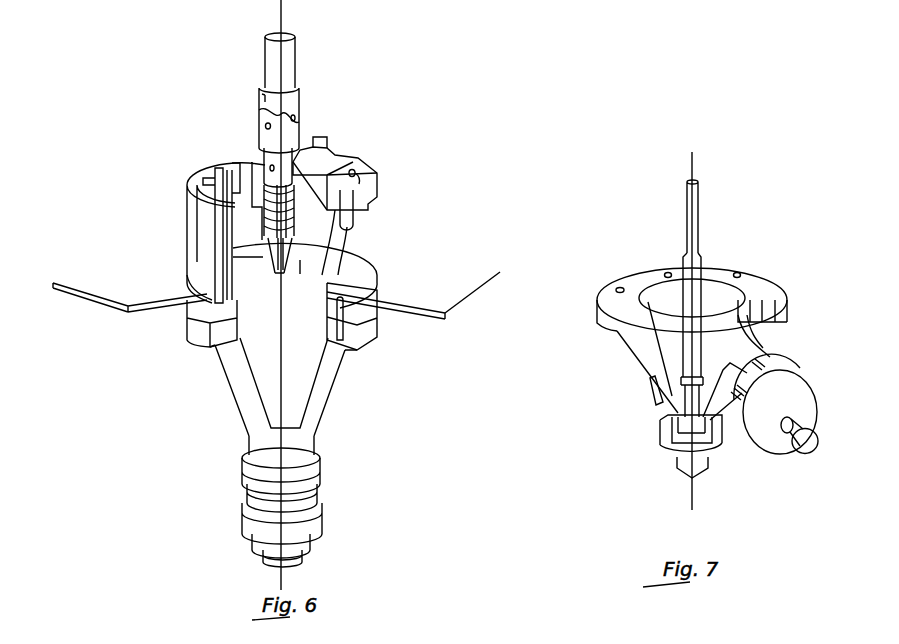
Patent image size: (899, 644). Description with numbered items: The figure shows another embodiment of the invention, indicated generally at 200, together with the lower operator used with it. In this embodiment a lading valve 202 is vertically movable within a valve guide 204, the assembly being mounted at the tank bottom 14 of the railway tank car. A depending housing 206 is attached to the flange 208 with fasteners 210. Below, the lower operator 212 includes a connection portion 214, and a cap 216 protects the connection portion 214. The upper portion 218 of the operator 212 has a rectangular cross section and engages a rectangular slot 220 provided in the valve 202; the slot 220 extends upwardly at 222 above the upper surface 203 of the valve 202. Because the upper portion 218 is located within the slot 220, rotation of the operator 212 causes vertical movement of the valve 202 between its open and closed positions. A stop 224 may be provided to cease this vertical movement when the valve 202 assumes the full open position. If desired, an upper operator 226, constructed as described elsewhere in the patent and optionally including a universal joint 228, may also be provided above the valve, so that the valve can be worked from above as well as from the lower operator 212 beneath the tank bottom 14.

In FIG. 6, the embodiment 200 is at (520, 142).
In FIG. 7, the embodiment 200 is at (708, 188).
In FIG. 6, the universal joint 228 is at (299, 101).
In FIG. 6, the upper operator 226 is at (293, 163).
In FIG. 6, the upward extension of slot 222 is at (368, 170).
In FIG. 6, the rectangular slot 220 is at (292, 192).
In FIG. 6, the upper surface 203 is at (312, 264).
In FIG. 6, the lading valve 202 is at (327, 270).
In FIG. 6, the flange 208 is at (376, 288).
In FIG. 6, the tank bottom 14 is at (480, 292).
In FIG. 6, the stop 224 is at (230, 204).
In FIG. 6, the valve guide 204 is at (203, 228).
In FIG. 6, the fasteners 210 is at (350, 338).
In FIG. 6, the depending housing 206 is at (233, 398).
In FIG. 7, the upper portion 218 is at (700, 208).
In FIG. 7, the lower operator 212 is at (700, 290).
In FIG. 7, the connection portion 214 is at (668, 418).
In FIG. 7, the cap 216 is at (703, 472).